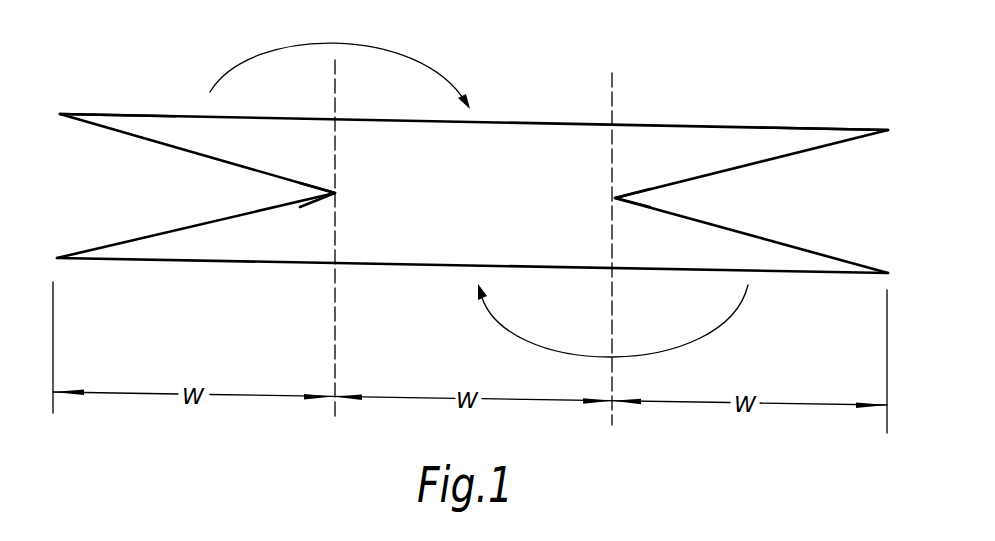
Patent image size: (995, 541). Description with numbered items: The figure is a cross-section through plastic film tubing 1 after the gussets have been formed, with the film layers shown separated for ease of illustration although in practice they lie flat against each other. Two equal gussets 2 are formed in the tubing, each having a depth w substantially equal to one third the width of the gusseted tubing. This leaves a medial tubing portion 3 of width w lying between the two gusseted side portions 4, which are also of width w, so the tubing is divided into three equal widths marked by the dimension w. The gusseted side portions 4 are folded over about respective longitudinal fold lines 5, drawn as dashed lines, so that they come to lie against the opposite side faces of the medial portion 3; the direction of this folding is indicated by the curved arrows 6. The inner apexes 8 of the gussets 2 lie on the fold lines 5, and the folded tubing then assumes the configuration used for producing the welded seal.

The blank / sheet element 1 is at (308, 289).
The gusset 2 is at (675, 181).
The medial tubing portion 3 is at (520, 112).
The gusseted side portion 4 is at (149, 98).
The longitudinal fold line 5 is at (612, 90).
The arrow 6 is at (426, 60).
The apex of oblique edges 8 is at (336, 192).